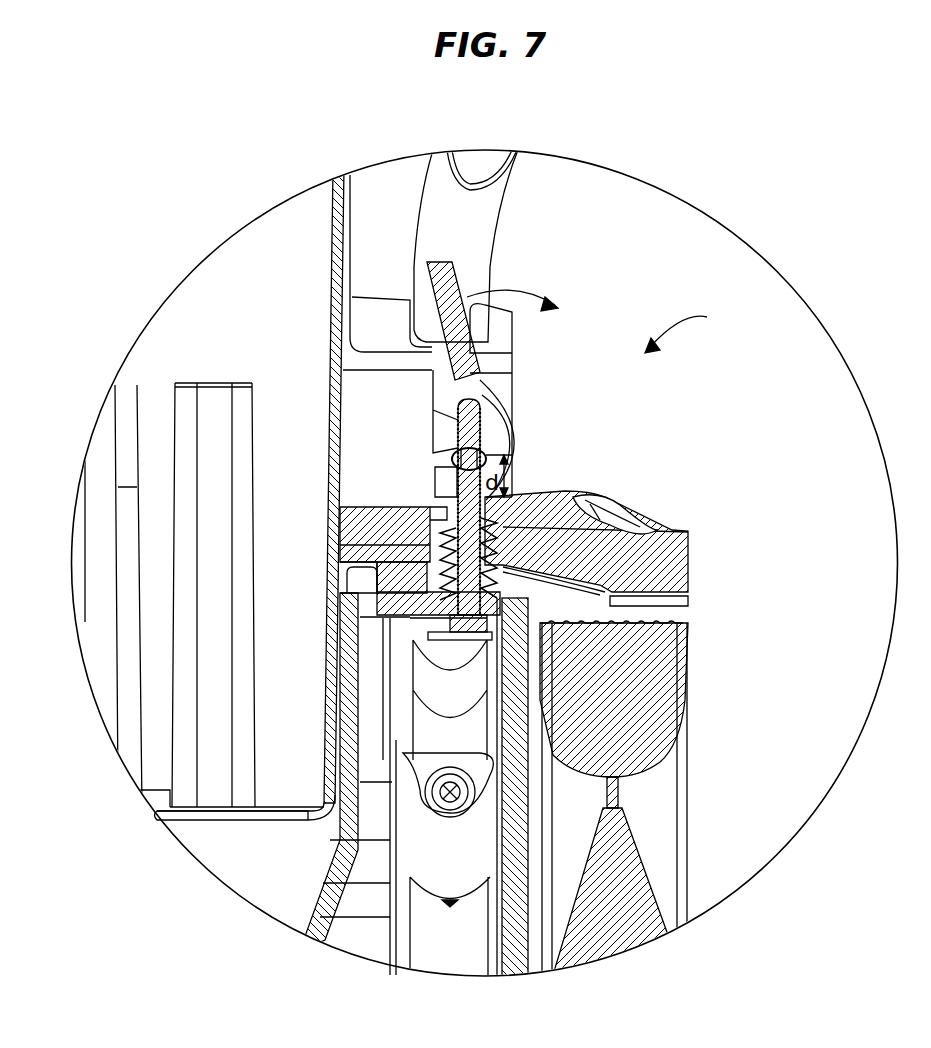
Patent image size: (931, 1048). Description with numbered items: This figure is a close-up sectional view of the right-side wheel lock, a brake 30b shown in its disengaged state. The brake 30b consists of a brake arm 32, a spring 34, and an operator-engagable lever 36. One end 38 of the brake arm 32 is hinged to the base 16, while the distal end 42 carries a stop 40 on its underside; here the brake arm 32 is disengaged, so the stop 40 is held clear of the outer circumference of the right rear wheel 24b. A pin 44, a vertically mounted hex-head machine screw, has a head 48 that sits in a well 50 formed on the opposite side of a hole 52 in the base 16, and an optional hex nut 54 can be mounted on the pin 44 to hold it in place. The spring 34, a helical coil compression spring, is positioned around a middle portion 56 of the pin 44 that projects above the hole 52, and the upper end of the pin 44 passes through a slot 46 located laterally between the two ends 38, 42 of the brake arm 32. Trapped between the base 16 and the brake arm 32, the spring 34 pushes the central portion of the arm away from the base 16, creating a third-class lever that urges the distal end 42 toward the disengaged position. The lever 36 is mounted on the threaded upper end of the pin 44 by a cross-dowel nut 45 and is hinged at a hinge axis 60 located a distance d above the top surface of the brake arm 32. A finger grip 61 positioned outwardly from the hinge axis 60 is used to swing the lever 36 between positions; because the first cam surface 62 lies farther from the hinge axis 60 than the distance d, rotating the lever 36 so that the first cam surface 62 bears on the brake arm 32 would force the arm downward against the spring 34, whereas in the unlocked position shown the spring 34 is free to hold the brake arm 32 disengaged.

The base 16 is at (313, 858).
The right rear wheel 24b is at (657, 685).
The brake 30b is at (698, 328).
The brake arm 32 is at (337, 505).
The spring 34 is at (607, 520).
The operator-engagable lever 36 is at (470, 392).
The one end of the brake arm 38 is at (340, 545).
The stop 40 is at (647, 603).
The distal end of the brake arm 42 is at (637, 562).
The pin 44 is at (458, 402).
The cross-dowel nut 45 is at (457, 420).
The slot 46 is at (455, 460).
The head 48 is at (440, 615).
The well 50 is at (405, 705).
The hole 52 is at (440, 598).
The hex nut 54 is at (380, 572).
The middle portion of the pin 56 is at (345, 560).
The hinge axis 60 is at (463, 443).
The finger grip 61 is at (430, 318).
The first cam surface 62 is at (520, 440).